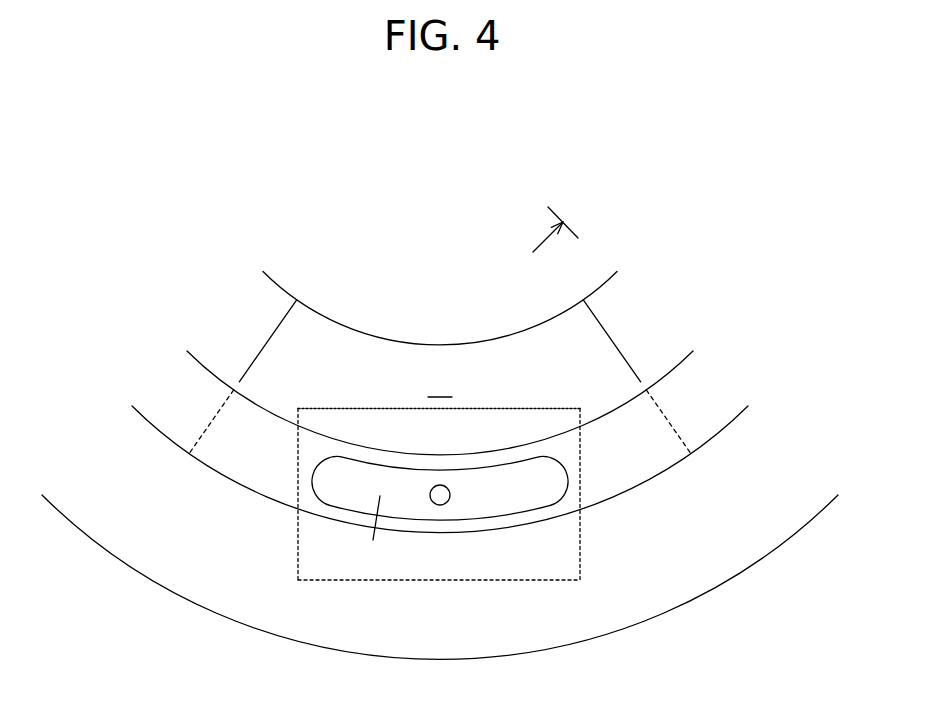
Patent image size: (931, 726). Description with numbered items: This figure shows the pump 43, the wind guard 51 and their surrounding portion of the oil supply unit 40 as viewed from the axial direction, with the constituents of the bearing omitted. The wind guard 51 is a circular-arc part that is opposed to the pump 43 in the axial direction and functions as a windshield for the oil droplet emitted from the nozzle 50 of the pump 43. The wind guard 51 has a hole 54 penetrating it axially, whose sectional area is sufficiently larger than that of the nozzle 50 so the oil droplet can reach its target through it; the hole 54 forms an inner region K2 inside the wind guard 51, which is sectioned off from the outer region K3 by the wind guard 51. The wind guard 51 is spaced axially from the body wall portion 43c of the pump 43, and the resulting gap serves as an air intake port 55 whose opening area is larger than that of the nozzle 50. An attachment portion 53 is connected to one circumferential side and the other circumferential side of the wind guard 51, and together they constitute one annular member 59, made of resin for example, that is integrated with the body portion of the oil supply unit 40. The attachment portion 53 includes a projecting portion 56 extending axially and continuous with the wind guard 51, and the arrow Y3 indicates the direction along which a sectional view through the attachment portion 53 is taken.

The oil supply unit 40 is at (432, 311).
The wind guard 51 is at (436, 344).
The attachment portion 53 is at (297, 300).
The annular member 59 is at (213, 375).
The arrow Y3 is at (541, 242).
The projecting portion 56 is at (178, 412).
The pump 43 is at (490, 581).
The body wall portion 43c is at (548, 560).
The intake port 55 is at (395, 454).
The hole 54 is at (500, 512).
The nozzle 50 is at (435, 500).
The outer region K3 is at (440, 384).
The inner region K2 is at (374, 507).